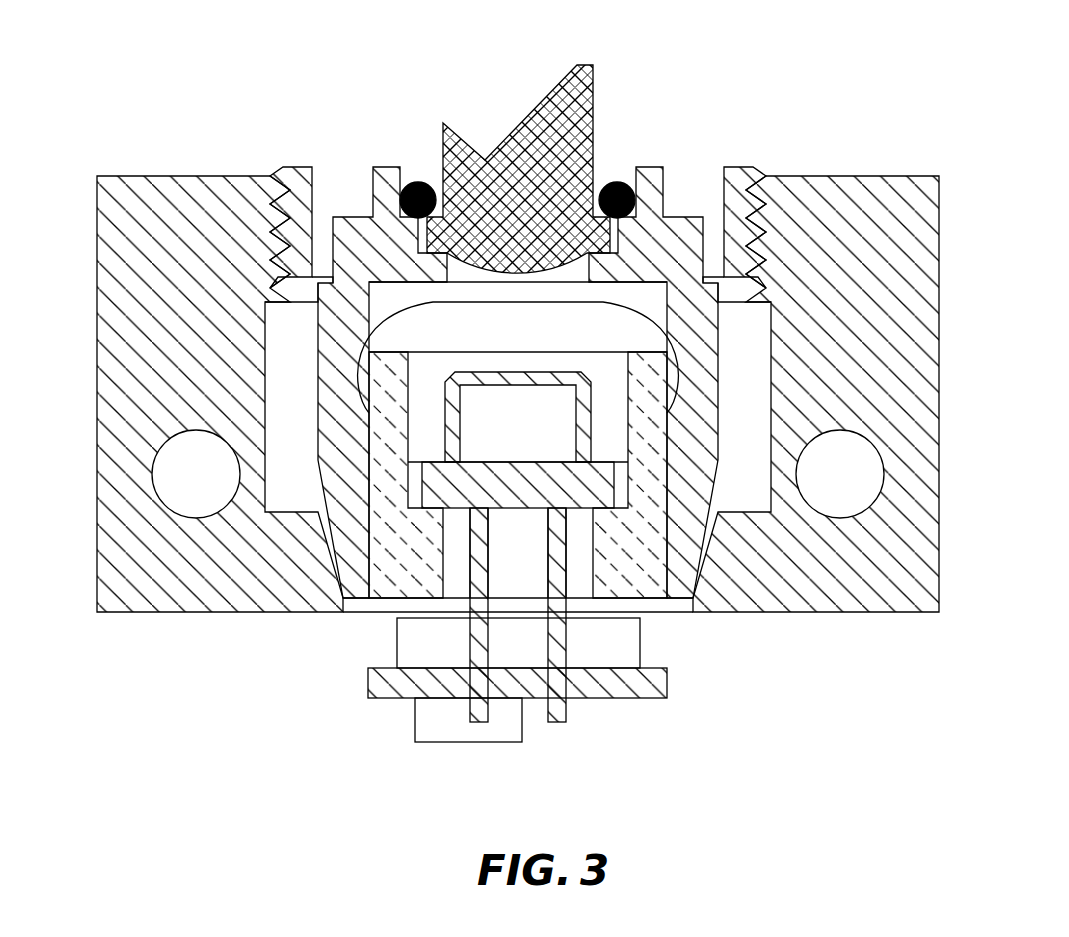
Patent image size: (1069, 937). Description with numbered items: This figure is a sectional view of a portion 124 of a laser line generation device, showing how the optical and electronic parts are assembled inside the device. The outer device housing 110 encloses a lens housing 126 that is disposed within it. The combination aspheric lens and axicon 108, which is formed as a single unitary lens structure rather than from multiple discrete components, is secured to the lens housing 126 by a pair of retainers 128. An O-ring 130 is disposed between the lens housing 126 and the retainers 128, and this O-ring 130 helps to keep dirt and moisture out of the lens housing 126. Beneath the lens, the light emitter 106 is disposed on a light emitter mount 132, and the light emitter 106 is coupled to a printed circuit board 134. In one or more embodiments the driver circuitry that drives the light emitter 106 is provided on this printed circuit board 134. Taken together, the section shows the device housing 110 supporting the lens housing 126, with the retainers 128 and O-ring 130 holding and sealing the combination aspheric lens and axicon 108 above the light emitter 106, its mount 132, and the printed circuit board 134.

The portion 124 is at (928, 130).
The device housing 110 is at (833, 195).
The retainers 128 is at (320, 183).
The lens housing 126 is at (363, 238).
The combination aspheric lens and axicon 108 is at (560, 100).
The O-ring 130 is at (418, 185).
The light emitter mount 132 is at (385, 587).
The light emitter 106 is at (595, 480).
The printed circuit board 134 is at (437, 722).